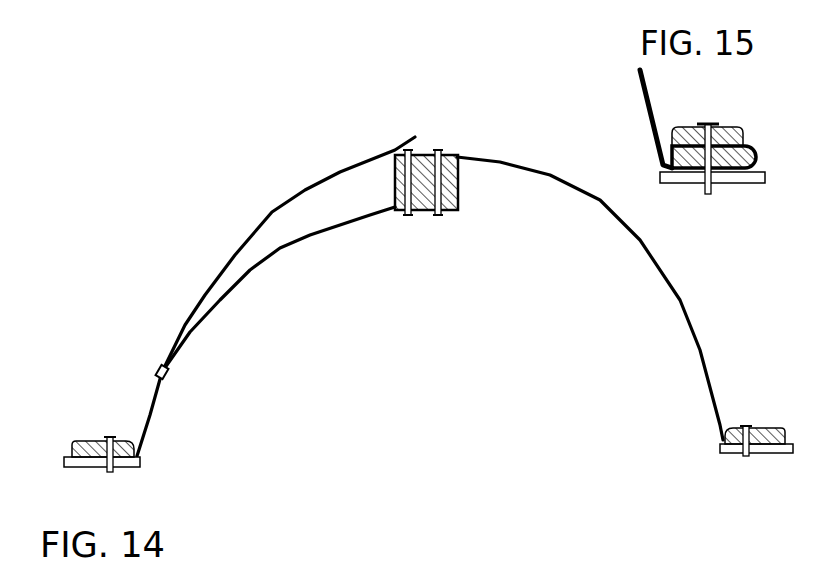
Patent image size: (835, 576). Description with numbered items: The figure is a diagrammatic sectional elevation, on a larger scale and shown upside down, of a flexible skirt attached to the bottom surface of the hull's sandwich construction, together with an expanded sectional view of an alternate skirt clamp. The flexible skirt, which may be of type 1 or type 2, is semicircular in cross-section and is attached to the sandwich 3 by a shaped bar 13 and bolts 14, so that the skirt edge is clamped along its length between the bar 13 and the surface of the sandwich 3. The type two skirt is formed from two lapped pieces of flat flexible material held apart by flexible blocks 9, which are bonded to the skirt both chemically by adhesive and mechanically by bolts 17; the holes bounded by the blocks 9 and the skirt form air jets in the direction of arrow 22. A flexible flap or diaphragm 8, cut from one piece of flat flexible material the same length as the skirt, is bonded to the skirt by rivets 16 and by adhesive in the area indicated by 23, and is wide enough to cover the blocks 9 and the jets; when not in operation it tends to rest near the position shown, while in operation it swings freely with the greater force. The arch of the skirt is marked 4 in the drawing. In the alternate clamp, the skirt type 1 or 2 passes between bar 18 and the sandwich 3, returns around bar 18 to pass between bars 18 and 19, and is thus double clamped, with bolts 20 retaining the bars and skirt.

In FIG. 15, the flexible skirt type 1 is at (655, 120).
In FIG. 14, the flexible skirt type 2 is at (418, 356).
In FIG. 14, the sandwich 3 is at (87, 468).
In FIG. 15, the sandwich 3 is at (686, 184).
In FIG. 14, the arch strand 4 is at (430, 296).
In FIG. 14, the flexible flap or diaphragm 8 is at (272, 212).
In FIG. 14, the flexible blocks 9 is at (428, 212).
In FIG. 14, the shaped bar 13 is at (85, 441).
In FIG. 14, the bolts 14 is at (110, 437).
In FIG. 14, the rivets 16 is at (159, 369).
In FIG. 14, the bolts 17 is at (439, 149).
In FIG. 15, the bar 18 is at (749, 150).
In FIG. 15, the bar 19 is at (730, 128).
In FIG. 15, the bolts 20 is at (708, 122).
In FIG. 14, the arrow 22 is at (392, 192).
In FIG. 14, the area of adhesive bonding 23 is at (205, 370).